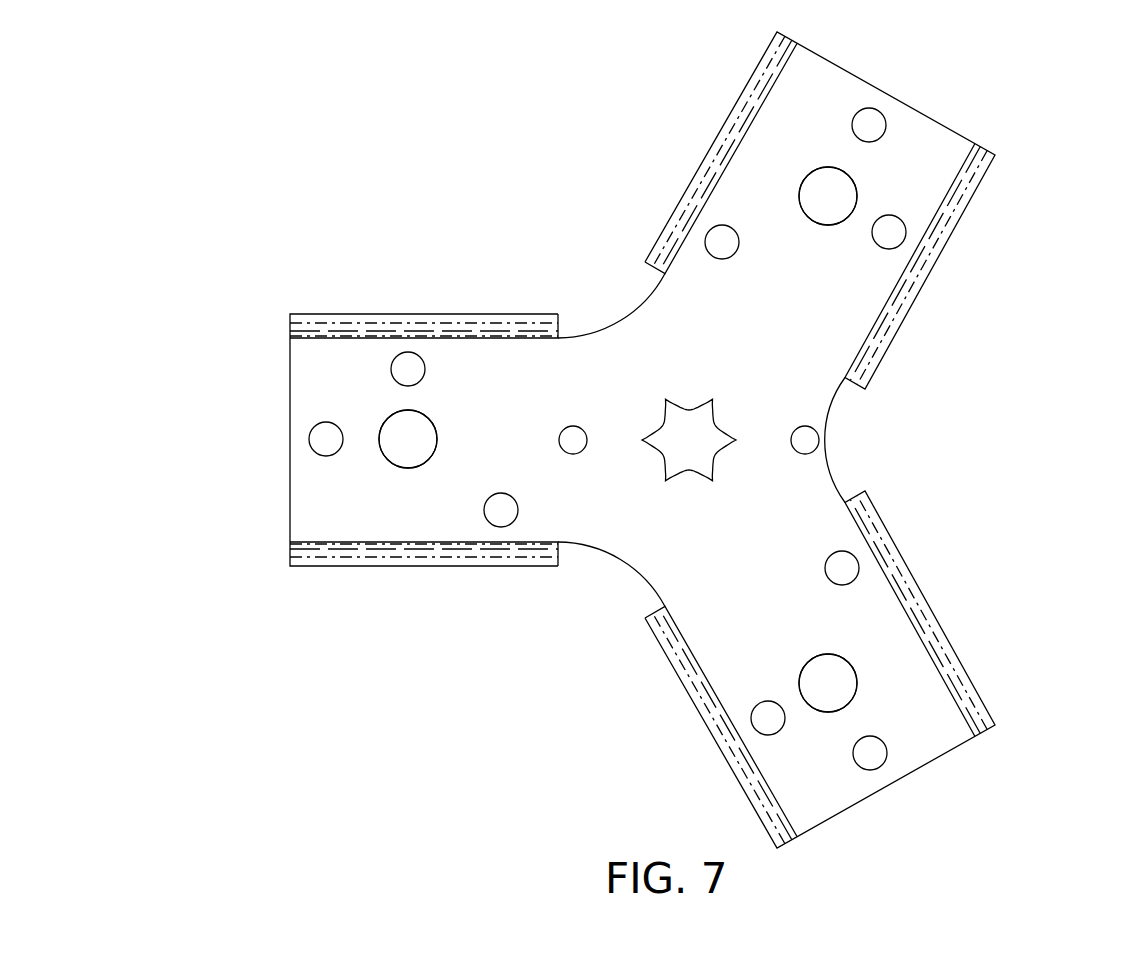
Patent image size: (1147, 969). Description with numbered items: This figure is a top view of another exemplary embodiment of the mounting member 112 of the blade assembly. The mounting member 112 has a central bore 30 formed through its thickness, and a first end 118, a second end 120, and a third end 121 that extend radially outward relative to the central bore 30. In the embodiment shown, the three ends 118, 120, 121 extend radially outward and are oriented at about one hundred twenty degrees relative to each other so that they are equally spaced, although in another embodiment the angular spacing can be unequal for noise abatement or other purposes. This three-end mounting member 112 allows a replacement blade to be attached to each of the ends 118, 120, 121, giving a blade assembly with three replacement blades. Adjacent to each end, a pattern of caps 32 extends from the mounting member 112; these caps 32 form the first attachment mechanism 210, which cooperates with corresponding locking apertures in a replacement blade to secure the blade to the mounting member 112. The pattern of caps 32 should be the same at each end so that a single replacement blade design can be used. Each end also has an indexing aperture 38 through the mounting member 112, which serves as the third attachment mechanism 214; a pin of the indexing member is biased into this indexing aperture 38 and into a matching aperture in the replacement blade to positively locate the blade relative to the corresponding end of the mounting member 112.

The mounting member 112 is at (1022, 487).
The first end 118 is at (918, 108).
The second end 120 is at (915, 770).
The third end 121 is at (290, 488).
The central bore 30 is at (696, 444).
The caps 32 is at (758, 700).
The indexing aperture 38 is at (431, 419).
The first attachment mechanism 210 is at (468, 508).
The third attachment mechanism 214 is at (446, 463).